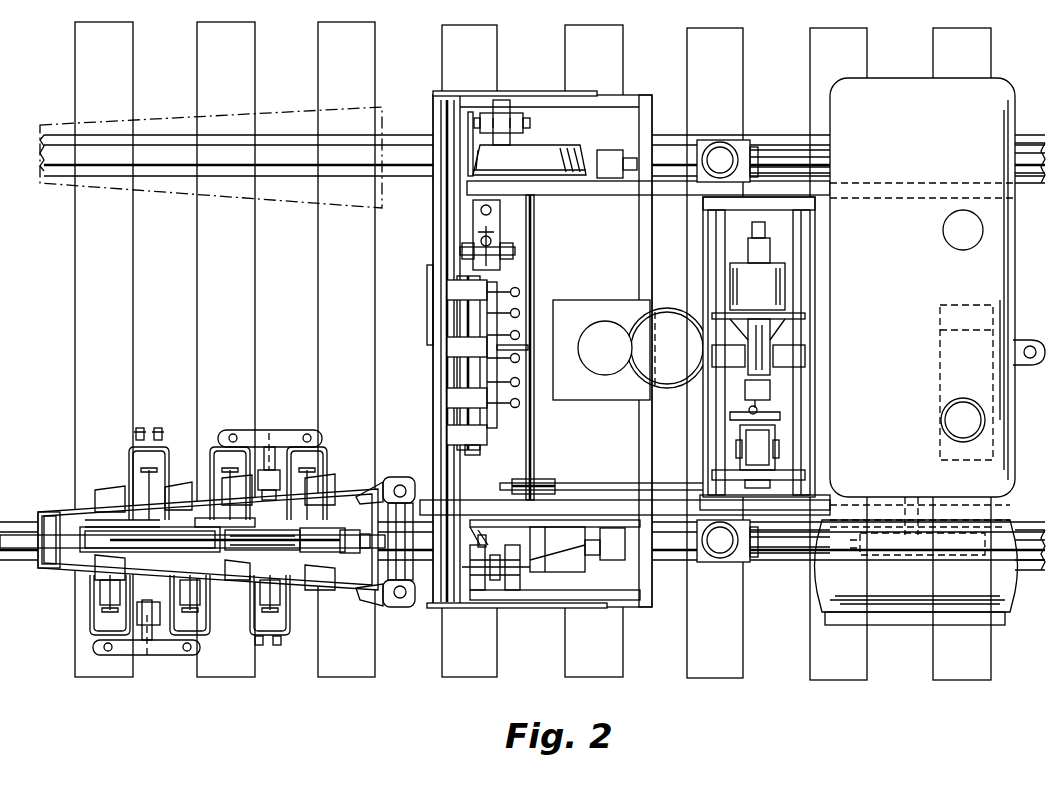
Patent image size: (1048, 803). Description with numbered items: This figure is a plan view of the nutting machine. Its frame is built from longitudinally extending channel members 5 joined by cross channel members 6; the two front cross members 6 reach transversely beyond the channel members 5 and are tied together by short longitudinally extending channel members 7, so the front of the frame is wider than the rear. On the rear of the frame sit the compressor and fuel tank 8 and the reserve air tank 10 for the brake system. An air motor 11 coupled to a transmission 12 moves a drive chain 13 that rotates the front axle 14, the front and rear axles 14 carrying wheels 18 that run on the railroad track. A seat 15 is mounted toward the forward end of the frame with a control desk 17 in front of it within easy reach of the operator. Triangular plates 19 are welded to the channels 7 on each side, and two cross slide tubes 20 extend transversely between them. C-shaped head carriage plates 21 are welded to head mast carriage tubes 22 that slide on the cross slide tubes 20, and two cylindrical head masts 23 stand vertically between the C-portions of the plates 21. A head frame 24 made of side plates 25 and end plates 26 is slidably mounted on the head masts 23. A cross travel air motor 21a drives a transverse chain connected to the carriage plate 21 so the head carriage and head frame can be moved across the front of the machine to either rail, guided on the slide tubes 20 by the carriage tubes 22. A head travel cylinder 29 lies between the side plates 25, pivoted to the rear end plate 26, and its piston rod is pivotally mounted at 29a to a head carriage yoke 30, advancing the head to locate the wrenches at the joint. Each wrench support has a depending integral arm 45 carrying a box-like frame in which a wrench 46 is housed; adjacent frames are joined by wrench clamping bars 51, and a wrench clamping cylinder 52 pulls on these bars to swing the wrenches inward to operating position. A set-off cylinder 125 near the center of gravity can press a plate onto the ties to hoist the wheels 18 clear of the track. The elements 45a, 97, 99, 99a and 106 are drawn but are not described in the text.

The longitudinally extending channel members 5 is at (678, 196).
The cross channel members 6 is at (488, 209).
The short longitudinally extending channel members 7 is at (628, 100).
The compressor and fuel tank 8 is at (937, 324).
The reserve air tank 10 is at (966, 312).
The air motor 11 is at (757, 266).
The transmission 12 is at (756, 353).
The drive chain 13 is at (594, 472).
The front axle 14 is at (536, 261).
The seat 15 is at (672, 312).
The control desk 17 is at (456, 312).
The wheels 18 is at (546, 150).
The triangular plates 19 is at (540, 95).
The cross slide tubes 20 is at (432, 268).
The C-shaped head carriage plates 21 is at (414, 490).
The cross travel air motor 21a is at (560, 558).
The head mast carriage tubes 22 is at (465, 609).
The cylindrical head masts 23 is at (388, 477).
The head frame 24 is at (68, 193).
The side plates 25 is at (88, 495).
The end plates 26 is at (38, 522).
The head travel cylinder 29 is at (342, 556).
The pivotal mounting of piston rod 29a is at (222, 553).
The head carriage yoke 30 is at (212, 530).
The depending integral arm 45 is at (131, 472).
The jaw block 45a is at (317, 492).
The wrenches 46 is at (96, 620).
The wrench clamping bars 51 is at (278, 434).
The wrench clamping cylinder 52 is at (138, 560).
The adjusting bolts 97 is at (178, 472).
The roller set 99 is at (520, 292).
The roller bracket 99a is at (497, 414).
The bearing 106 is at (728, 160).
The set-off cylinder 125 is at (630, 338).